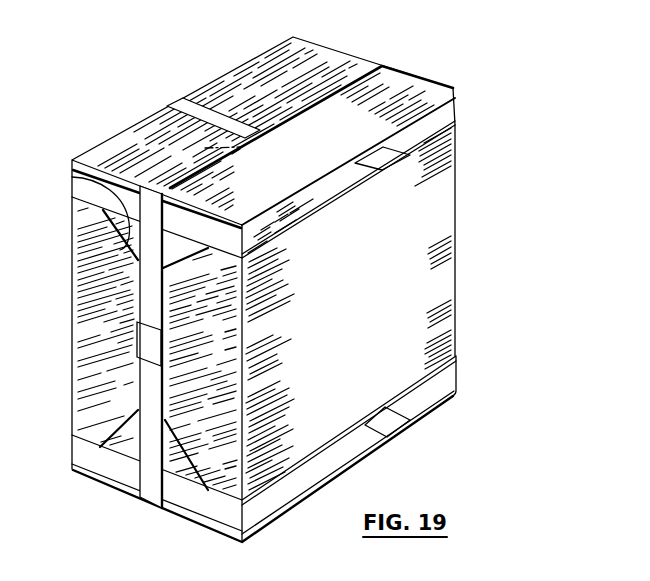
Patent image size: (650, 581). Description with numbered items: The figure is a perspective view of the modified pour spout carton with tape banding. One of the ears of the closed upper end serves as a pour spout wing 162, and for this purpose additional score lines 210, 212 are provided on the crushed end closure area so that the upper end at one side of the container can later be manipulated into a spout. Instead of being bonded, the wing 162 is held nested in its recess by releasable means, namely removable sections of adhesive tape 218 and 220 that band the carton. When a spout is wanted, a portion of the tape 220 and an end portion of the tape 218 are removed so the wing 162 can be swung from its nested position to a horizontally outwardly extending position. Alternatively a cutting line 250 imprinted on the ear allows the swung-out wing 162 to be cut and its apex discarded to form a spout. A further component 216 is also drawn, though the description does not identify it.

The wing 162 is at (170, 190).
The score line 210 is at (170, 197).
The score line 212 is at (72, 177).
The base skid 216 is at (267, 500).
The adhesive tape 218 is at (438, 123).
The adhesive tape 220 is at (360, 62).
The cutting line 250 is at (165, 268).